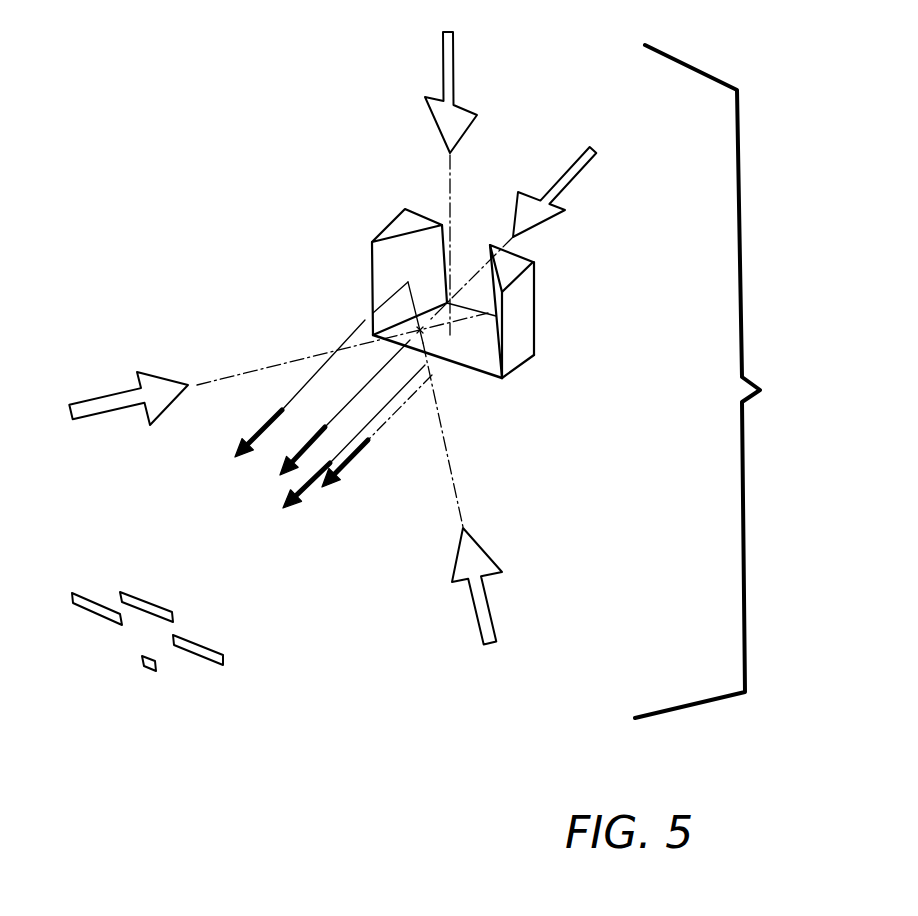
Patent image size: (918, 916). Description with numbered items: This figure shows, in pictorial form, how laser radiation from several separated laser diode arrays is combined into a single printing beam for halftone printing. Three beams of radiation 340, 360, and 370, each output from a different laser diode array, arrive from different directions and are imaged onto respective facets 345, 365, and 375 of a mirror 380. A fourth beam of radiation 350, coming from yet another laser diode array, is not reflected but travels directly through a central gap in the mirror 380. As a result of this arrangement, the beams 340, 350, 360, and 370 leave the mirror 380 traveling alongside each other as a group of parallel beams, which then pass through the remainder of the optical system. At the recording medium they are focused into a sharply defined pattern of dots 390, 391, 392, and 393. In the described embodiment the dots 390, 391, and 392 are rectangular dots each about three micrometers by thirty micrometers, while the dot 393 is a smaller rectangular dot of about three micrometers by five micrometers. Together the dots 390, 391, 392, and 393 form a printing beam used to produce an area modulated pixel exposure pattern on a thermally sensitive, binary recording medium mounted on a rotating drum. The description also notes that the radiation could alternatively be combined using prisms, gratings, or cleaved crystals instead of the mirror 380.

The beam of radiation 340 is at (112, 395).
The facet 345 is at (496, 322).
The beam of radiation 350 is at (568, 183).
The beam of radiation 360 is at (490, 607).
The facet 365 is at (390, 262).
The beam of radiation 370 is at (458, 76).
The facet 375 is at (477, 357).
The mirror 380 is at (532, 309).
The rectangular dot 390 is at (83, 594).
The rectangular dot 391 is at (153, 602).
The rectangular dot 392 is at (200, 642).
The rectangular dot 393 is at (148, 672).